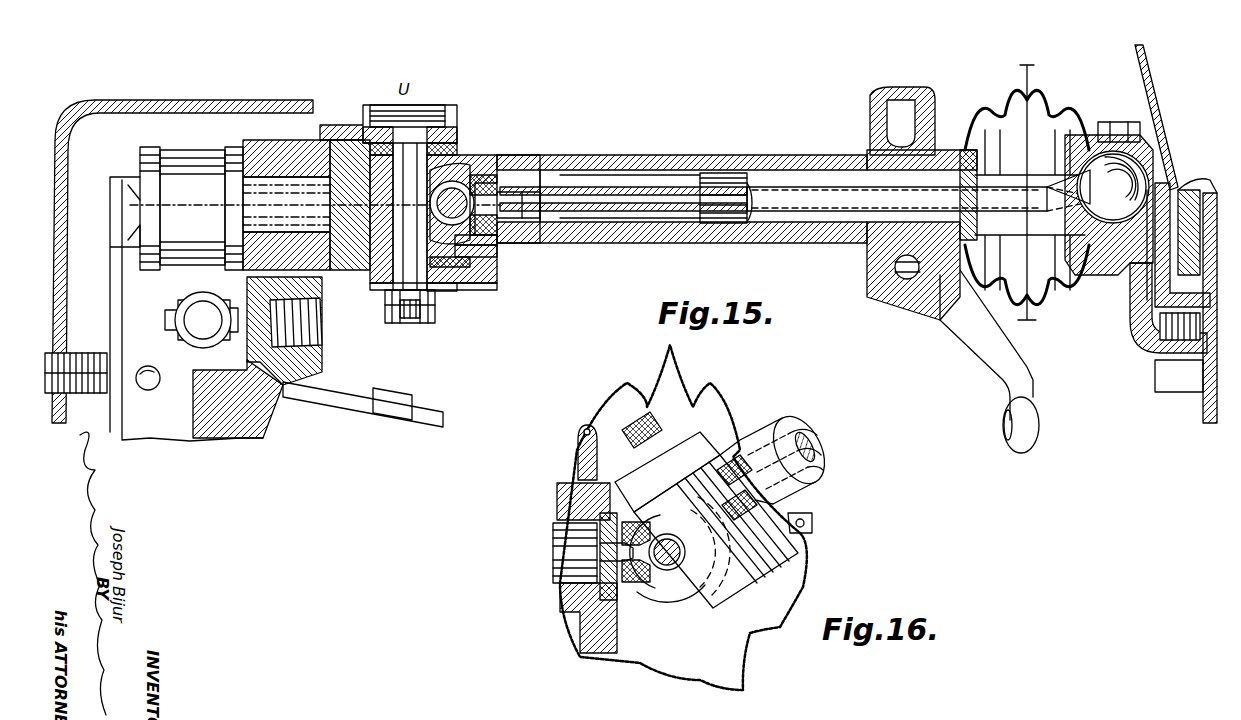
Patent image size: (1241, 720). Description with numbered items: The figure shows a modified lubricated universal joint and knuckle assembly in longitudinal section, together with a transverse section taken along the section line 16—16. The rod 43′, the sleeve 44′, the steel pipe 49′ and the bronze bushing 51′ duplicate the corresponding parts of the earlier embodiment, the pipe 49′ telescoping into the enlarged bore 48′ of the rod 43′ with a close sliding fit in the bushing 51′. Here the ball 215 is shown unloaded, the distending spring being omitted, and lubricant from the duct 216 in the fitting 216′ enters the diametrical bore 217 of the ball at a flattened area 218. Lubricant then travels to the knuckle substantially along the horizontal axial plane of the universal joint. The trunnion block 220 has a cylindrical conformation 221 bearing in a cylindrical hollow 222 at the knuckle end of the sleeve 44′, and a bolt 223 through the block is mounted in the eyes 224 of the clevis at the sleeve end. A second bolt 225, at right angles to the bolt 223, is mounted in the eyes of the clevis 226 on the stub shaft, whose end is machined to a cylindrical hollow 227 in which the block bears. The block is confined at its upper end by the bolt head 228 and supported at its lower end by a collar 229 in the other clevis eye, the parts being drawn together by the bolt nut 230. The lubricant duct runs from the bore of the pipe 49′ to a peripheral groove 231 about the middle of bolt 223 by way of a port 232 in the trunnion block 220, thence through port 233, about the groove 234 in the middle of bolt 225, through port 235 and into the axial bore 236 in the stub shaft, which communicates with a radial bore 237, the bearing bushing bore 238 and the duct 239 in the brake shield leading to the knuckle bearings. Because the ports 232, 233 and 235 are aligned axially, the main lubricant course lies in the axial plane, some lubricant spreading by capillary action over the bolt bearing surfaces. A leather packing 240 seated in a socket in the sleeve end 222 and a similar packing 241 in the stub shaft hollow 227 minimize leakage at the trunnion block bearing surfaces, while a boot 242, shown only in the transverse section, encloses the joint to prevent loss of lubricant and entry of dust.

In FIG. 15, the section line 16 is at (284, 210).
In FIG. 15, the rod 43′ is at (735, 225).
In FIG. 15, the sleeve 44′ is at (598, 163).
In FIG. 15, the enlarged bore 48′ is at (855, 190).
In FIG. 15, the pipe 49′ is at (660, 200).
In FIG. 15, the bushing 51′ is at (720, 173).
In FIG. 15, the ball 215 is at (1108, 150).
In FIG. 15, the duct 216 is at (1135, 300).
In FIG. 15, the fitting 216′ is at (1140, 350).
In FIG. 15, the diametrical bore 217 is at (1105, 260).
In FIG. 15, the flattened area 218 is at (1160, 185).
In FIG. 15, the trunnion block 220 is at (480, 176).
In FIG. 16, the trunnion block 220 is at (760, 430).
In FIG. 15, the cylindrical conformation 221 is at (540, 172).
In FIG. 15, the cylindrical hollow 222 is at (483, 214).
In FIG. 15, the bolt 223 is at (460, 268).
In FIG. 16, the bolt 223 is at (598, 428).
In FIG. 16, the eyes 224 is at (700, 440).
In FIG. 15, the bolt 225 is at (418, 152).
In FIG. 16, the bolt 225 is at (668, 570).
In FIG. 15, the clevis 226 is at (445, 148).
In FIG. 15, the cylindrical hollow 227 is at (385, 292).
In FIG. 15, the bolt head 228 is at (398, 130).
In FIG. 15, the collar 229 is at (440, 300).
In FIG. 15, the bolt nut 230 is at (435, 320).
In FIG. 15, the peripheral groove 231 is at (470, 232).
In FIG. 16, the peripheral groove 231 is at (673, 572).
In FIG. 15, the port 232 is at (485, 244).
In FIG. 15, the port 233 is at (447, 290).
In FIG. 15, the groove 234 is at (478, 162).
In FIG. 16, the groove 234 is at (667, 568).
In FIG. 15, the port 235 is at (430, 110).
In FIG. 15, the axial bore 236 is at (300, 165).
In FIG. 16, the axial bore 236 is at (553, 548).
In FIG. 15, the radial bore 237 is at (232, 208).
In FIG. 15, the bearing bushing bore 238 is at (318, 402).
In FIG. 15, the duct 239 is at (258, 440).
In FIG. 15, the leather packing 240 is at (465, 218).
In FIG. 16, the leather packing 240 is at (815, 440).
In FIG. 15, the packing 241 is at (355, 140).
In FIG. 16, the packing 241 is at (637, 593).
In FIG. 16, the boot 242 is at (805, 585).